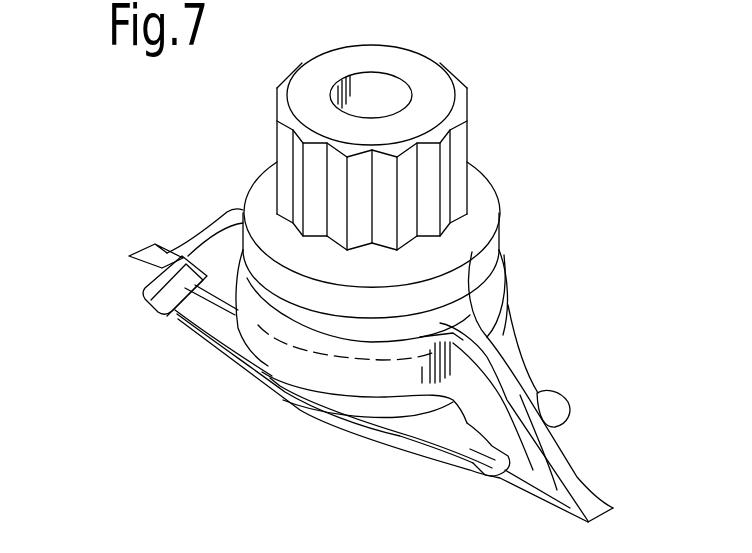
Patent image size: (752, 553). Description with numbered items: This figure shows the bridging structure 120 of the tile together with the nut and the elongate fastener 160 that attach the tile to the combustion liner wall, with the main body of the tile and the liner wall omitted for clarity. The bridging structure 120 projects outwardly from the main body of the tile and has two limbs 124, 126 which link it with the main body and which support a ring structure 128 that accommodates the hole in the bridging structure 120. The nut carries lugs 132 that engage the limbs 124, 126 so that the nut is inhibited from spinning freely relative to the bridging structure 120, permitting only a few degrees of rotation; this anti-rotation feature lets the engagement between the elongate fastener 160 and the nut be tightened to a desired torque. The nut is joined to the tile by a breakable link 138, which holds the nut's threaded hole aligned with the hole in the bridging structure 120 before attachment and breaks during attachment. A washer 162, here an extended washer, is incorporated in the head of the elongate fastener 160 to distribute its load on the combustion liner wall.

The elongate fastener 160 is at (428, 172).
The washer 162 is at (467, 233).
The ring structure 128 is at (492, 287).
The bridging structure 120 is at (488, 400).
The limb 124 is at (220, 252).
The breakable link 138 is at (148, 294).
The lug 132 is at (212, 322).
The limb 126 is at (507, 433).